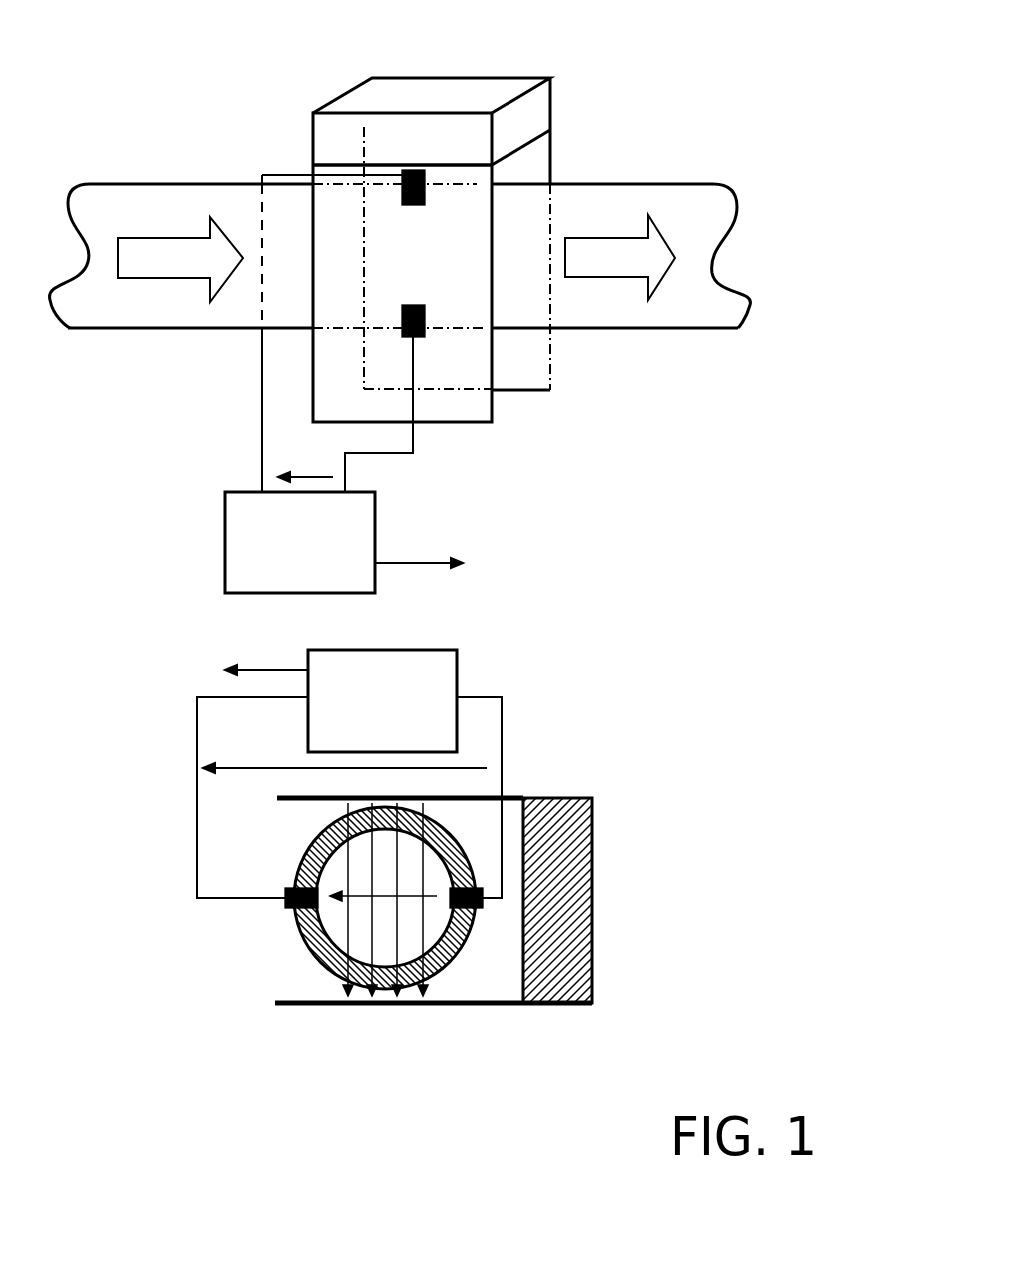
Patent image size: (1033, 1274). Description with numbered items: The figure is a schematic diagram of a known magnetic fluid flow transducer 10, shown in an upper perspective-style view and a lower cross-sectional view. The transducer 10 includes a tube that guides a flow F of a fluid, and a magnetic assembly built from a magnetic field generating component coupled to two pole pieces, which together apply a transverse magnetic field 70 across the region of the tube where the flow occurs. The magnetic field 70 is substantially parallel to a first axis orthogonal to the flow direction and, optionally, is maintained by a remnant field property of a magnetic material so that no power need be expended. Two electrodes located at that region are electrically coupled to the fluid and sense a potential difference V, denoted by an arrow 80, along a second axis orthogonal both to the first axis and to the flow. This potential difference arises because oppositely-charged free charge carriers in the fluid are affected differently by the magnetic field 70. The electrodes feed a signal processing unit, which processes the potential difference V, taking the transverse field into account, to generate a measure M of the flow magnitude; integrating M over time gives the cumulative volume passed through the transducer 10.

The transducer 10 is at (556, 35).
The transverse magnetic field 70 is at (397, 932).
The arrow 80 is at (323, 948).